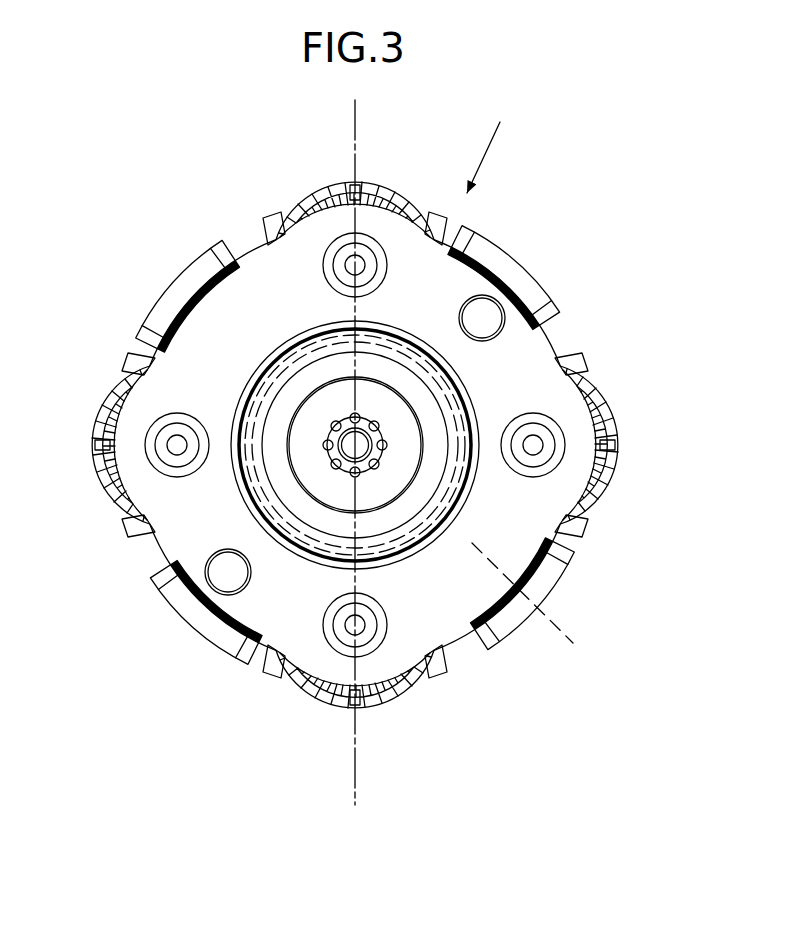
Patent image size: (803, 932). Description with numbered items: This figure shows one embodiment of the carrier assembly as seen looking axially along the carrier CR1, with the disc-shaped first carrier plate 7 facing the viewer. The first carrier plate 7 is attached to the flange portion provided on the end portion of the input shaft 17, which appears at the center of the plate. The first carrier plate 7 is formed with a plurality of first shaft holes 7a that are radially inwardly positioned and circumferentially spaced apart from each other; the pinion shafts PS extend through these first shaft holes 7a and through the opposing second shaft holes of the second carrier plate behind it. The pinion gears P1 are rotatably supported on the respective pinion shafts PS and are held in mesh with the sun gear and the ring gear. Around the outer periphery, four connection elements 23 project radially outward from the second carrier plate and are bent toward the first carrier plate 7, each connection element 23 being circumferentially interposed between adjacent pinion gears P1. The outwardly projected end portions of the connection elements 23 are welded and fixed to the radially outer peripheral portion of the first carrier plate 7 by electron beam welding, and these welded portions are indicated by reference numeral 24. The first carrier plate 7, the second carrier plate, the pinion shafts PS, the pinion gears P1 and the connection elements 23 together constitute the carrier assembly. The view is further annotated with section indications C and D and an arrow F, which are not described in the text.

The first carrier plate 7 is at (438, 266).
The first shaft holes 7a is at (378, 628).
The input shaft 17 is at (323, 402).
The connection elements 23 is at (198, 258).
The welded and fixed portions 24 is at (180, 580).
The pinion gears P1 is at (372, 708).
The pinion shafts PS is at (340, 628).
The section line C is at (358, 142).
The section line D is at (358, 787).
The force direction F is at (498, 146).
The carrier CR1 is at (244, 703).